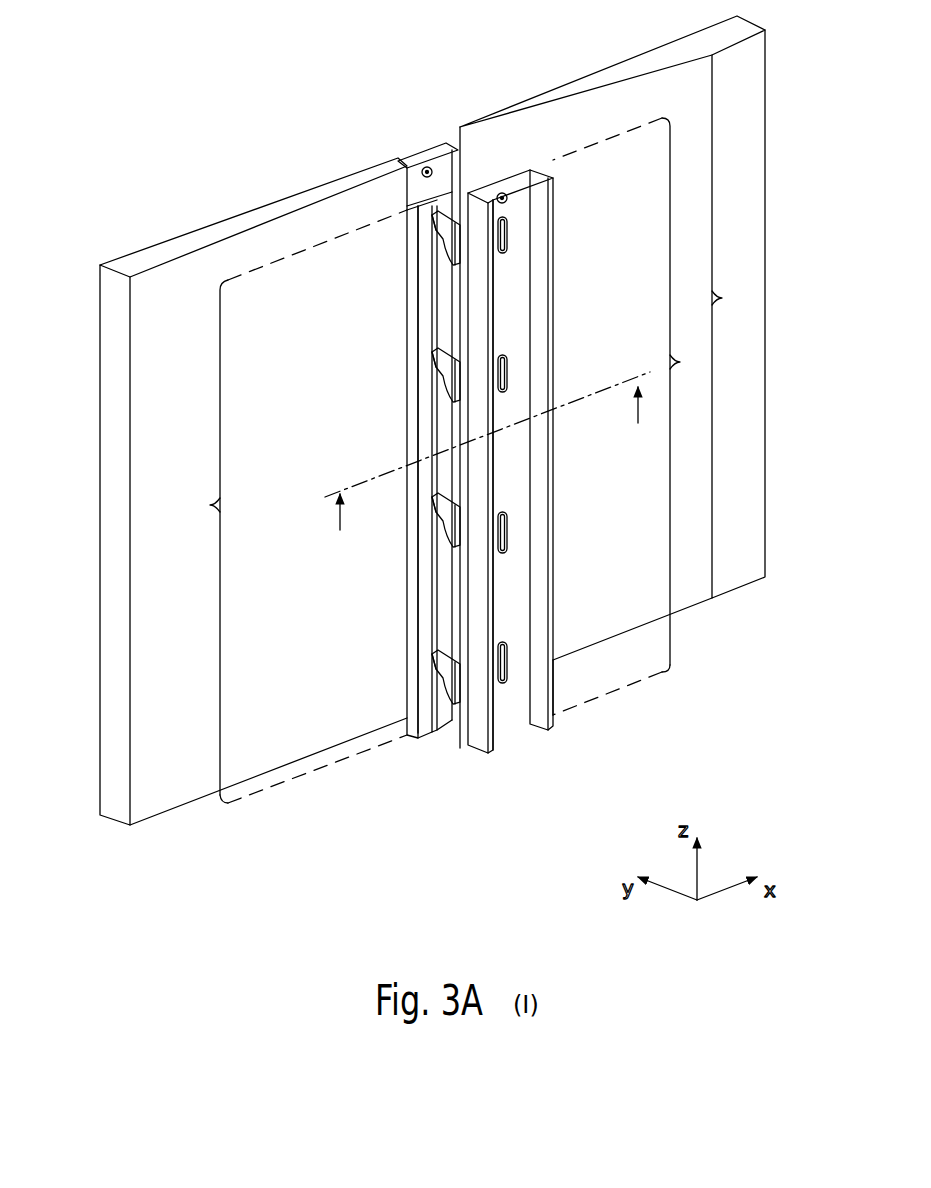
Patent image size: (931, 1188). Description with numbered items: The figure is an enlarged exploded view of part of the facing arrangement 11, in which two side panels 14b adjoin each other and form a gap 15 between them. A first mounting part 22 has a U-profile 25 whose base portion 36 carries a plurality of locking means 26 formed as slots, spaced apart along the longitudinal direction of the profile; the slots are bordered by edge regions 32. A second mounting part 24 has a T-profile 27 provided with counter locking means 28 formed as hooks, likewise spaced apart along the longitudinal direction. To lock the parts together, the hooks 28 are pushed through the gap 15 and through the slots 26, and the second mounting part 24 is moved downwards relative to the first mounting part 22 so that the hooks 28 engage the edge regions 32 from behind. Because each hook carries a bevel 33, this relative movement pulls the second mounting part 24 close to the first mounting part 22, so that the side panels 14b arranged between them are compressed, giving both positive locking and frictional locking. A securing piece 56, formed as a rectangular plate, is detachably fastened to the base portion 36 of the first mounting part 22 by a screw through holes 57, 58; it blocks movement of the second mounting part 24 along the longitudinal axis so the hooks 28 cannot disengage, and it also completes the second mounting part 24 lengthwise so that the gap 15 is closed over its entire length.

The facing arrangement 11 is at (148, 112).
The side panel 14b is at (230, 225).
The gap 15 is at (472, 431).
The first mounting part 22 is at (562, 722).
The second mounting part 24 is at (403, 502).
The U-profile 25 is at (529, 426).
The locking means 26 is at (507, 233).
The T-profile 27 is at (412, 736).
The counter locking means 28 is at (403, 464).
The edge region 32 is at (510, 268).
The bevel 33 is at (446, 252).
The base portion 36 is at (523, 178).
The piece 56 is at (418, 139).
The hole 57 is at (426, 166).
The hole 58 is at (502, 192).